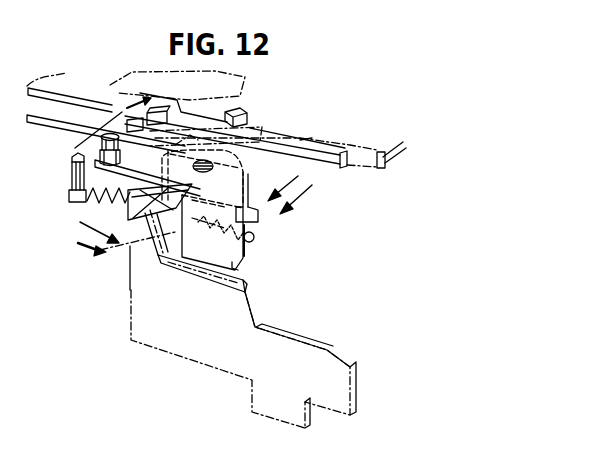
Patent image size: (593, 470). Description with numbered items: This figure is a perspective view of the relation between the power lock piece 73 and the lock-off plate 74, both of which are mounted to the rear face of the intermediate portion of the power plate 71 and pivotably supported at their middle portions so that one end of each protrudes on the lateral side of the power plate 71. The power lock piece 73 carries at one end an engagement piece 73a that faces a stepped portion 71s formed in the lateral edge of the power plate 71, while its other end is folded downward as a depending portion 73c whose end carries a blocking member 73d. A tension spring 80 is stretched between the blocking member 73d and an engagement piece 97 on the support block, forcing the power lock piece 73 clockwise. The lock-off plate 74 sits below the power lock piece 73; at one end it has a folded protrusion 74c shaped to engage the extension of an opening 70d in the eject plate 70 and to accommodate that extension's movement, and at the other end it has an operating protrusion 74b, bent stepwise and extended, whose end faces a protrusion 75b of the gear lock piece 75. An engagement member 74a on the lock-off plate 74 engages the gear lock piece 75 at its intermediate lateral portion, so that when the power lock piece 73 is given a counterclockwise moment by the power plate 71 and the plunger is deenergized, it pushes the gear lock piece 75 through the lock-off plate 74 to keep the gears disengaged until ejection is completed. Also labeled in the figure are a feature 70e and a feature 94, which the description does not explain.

The eject plate 70 is at (381, 160).
The opening in the eject plate 70d is at (135, 73).
The rail portion 70e is at (258, 118).
The power plate 71 is at (313, 160).
The stepped portion 71s is at (170, 152).
The power lock piece 73 is at (178, 150).
The engagement piece 73a is at (108, 134).
The depending portion 73c is at (213, 250).
The blocking member 73d is at (258, 238).
The lock-off plate 74 is at (255, 163).
The engagement member 74a is at (298, 136).
The operating protrusion 74b is at (114, 250).
The folded protrusion 74c is at (241, 108).
The gear lock piece 75 is at (247, 285).
The protrusion of the gear lock piece 75b is at (146, 246).
The tension spring 80 is at (85, 229).
The slot 94 is at (212, 172).
The engagement piece 97 is at (70, 172).